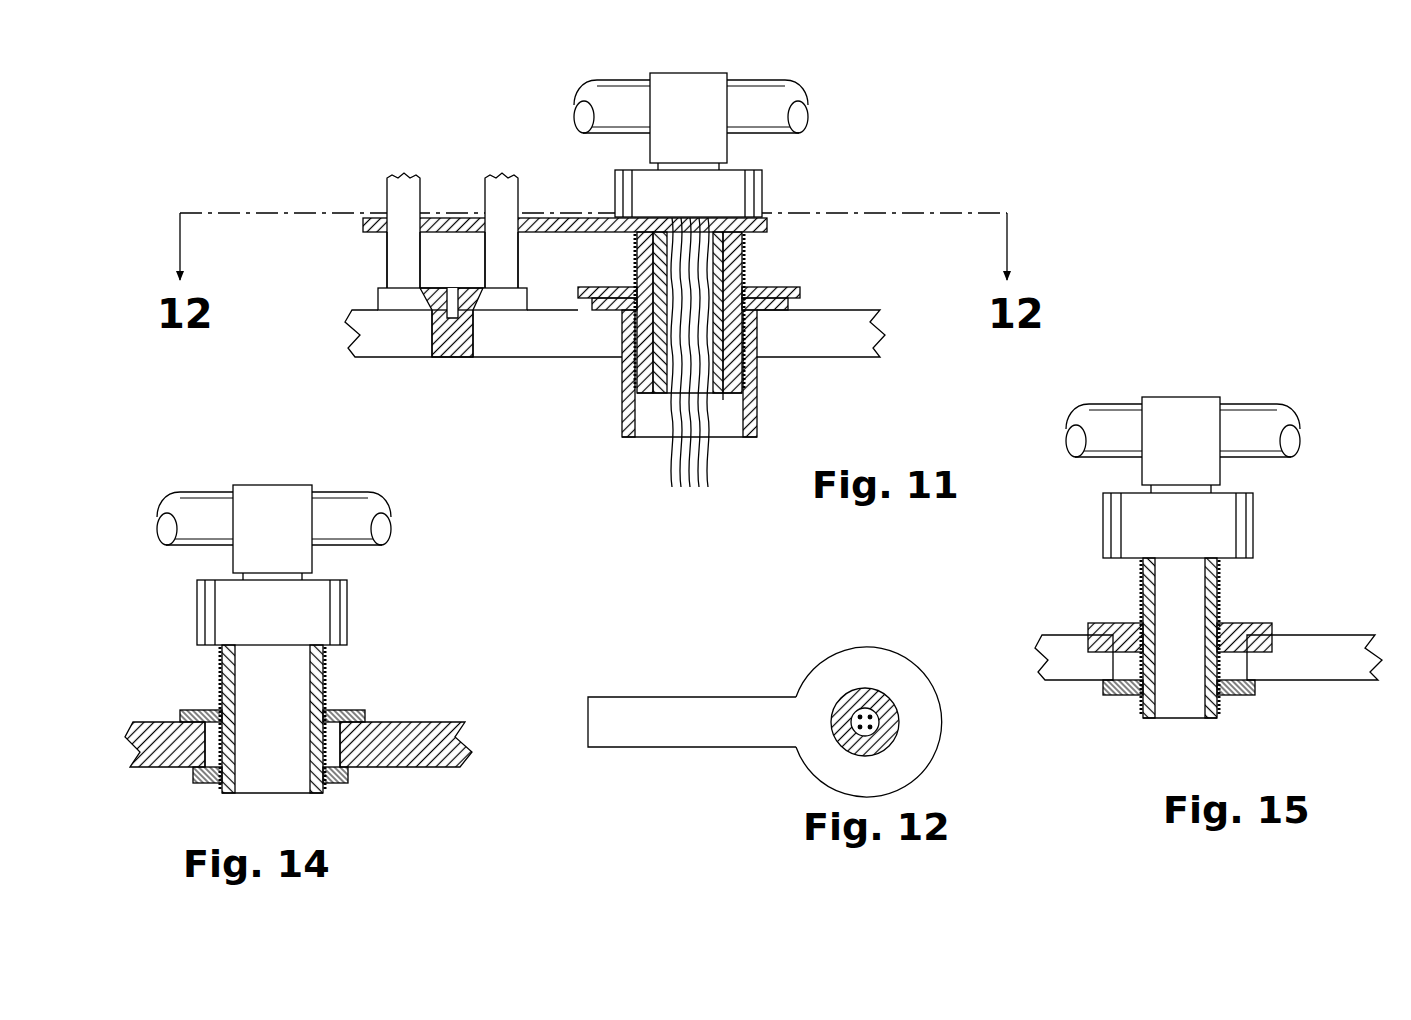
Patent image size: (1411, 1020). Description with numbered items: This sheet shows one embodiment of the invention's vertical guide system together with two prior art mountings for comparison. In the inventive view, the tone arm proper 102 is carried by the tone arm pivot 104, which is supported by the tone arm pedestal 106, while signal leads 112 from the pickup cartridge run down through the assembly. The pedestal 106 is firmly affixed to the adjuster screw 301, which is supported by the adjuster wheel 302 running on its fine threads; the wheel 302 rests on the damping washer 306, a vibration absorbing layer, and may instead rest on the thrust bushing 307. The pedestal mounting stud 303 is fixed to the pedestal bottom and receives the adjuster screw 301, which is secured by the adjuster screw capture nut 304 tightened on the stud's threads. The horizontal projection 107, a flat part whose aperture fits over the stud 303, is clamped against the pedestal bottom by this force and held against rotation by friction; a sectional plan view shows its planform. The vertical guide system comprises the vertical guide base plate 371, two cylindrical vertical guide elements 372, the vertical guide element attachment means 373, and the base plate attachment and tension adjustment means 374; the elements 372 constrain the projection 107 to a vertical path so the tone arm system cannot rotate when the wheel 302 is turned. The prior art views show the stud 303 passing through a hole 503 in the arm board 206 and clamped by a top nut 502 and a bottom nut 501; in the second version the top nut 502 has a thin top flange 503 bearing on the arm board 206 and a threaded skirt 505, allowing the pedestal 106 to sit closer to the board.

In FIG. 11, the tone arm proper 102 is at (612, 92).
In FIG. 14, the tone arm proper 102 is at (195, 503).
In FIG. 15, the tone arm proper 102 is at (1102, 417).
In FIG. 11, the tone arm pivot 104 is at (703, 82).
In FIG. 14, the tone arm pivot 104 is at (285, 492).
In FIG. 15, the tone arm pivot 104 is at (1193, 405).
In FIG. 11, the tone arm pedestal 106 is at (748, 189).
In FIG. 14, the tone arm pedestal 106 is at (332, 598).
In FIG. 15, the tone arm pedestal 106 is at (1238, 513).
In FIG. 11, the horizontal projection 107 is at (585, 226).
In FIG. 12, the horizontal projection 107 is at (713, 713).
In FIG. 11, the signal leads 112 is at (722, 515).
In FIG. 11, the arm board 206 is at (833, 341).
In FIG. 14, the arm board 206 is at (430, 730).
In FIG. 15, the arm board 206 is at (1067, 672).
In FIG. 11, the adjuster screw 301 is at (742, 268).
In FIG. 11, the adjuster wheel 302 is at (803, 291).
In FIG. 11, the pedestal mounting stud 303 is at (672, 395).
In FIG. 12, the pedestal mounting stud 303 is at (893, 696).
In FIG. 14, the pedestal mounting stud 303 is at (327, 680).
In FIG. 15, the pedestal mounting stud 303 is at (1157, 683).
In FIG. 11, the adjuster screw capture nut 304 is at (723, 400).
In FIG. 11, the damping washer 306 is at (803, 301).
In FIG. 11, the thrust bushing 307 is at (757, 428).
In FIG. 11, the vertical guide base plate 371 is at (388, 297).
In FIG. 11, the vertical guide elements 372 is at (388, 255).
In FIG. 11, the vertical guide element attachment means 373 is at (498, 175).
In FIG. 11, the vertical guide base plate attachment and tension adjustment means 374 is at (436, 347).
In FIG. 14, the bottom nut 501 is at (327, 785).
In FIG. 15, the bottom nut 501 is at (1243, 697).
In FIG. 14, the top nut 502 is at (181, 710).
In FIG. 15, the top nut 502 is at (1274, 594).
In FIG. 14, the hole 503 is at (318, 757).
In FIG. 15, the hole 503 is at (1092, 623).
In FIG. 15, the skirt 505 is at (1250, 648).